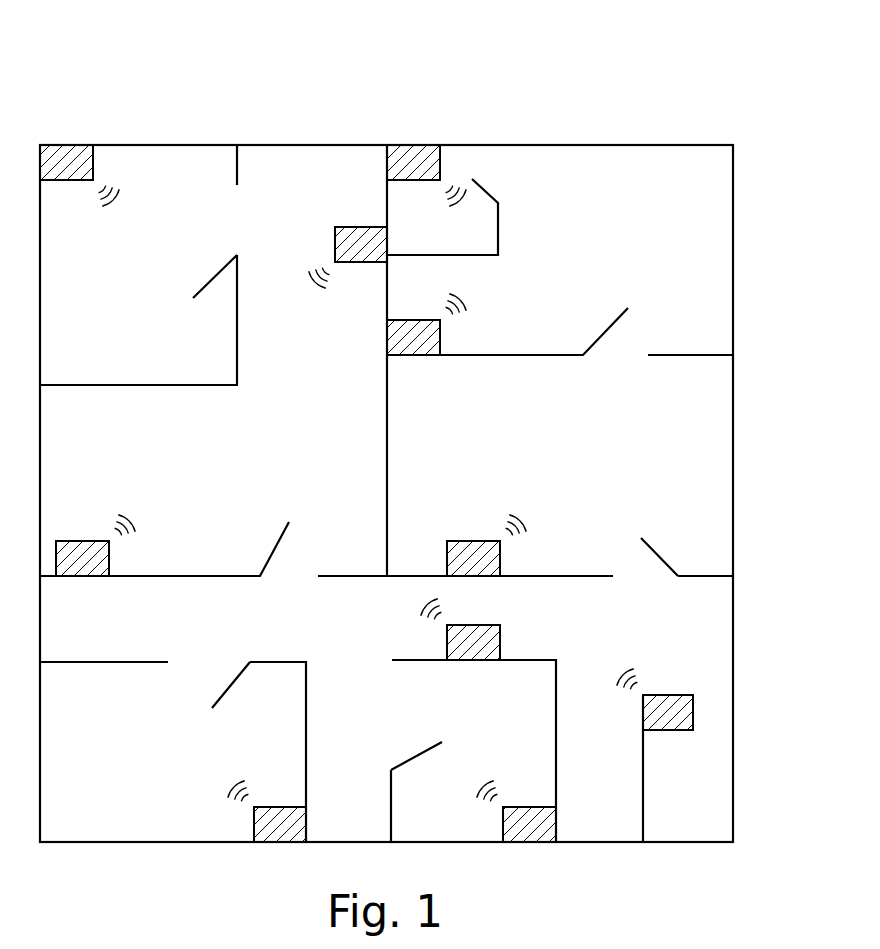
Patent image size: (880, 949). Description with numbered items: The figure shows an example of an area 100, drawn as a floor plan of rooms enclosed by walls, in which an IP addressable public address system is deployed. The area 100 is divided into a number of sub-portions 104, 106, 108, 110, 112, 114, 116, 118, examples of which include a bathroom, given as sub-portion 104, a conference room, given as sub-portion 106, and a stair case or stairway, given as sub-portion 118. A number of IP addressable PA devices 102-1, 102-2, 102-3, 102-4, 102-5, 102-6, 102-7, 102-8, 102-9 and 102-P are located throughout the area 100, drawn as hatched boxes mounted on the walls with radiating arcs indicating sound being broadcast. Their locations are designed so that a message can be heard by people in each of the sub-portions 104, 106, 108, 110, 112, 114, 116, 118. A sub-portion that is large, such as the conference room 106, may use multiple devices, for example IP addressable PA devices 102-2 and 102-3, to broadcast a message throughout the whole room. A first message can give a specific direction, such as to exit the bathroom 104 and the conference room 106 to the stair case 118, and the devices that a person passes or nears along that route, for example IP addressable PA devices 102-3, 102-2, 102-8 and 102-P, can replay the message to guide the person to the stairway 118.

The area 100 is at (107, 55).
The IP addressable PA device 102-1 is at (64, 145).
The IP addressable PA device 102-2 is at (76, 541).
The IP addressable PA device 102-3 is at (355, 227).
The IP addressable PA device 102-4 is at (276, 807).
The IP addressable PA device 102-5 is at (417, 145).
The IP addressable PA device 102-6 is at (412, 320).
The IP addressable PA device 102-7 is at (465, 541).
The IP addressable PA device 102-8 is at (481, 625).
The IP addressable PA device 102-9 is at (518, 807).
The IP addressable PA device 102-P is at (677, 695).
The sub-portion 104 is at (135, 276).
The sub-portion 106 is at (317, 419).
The sub-portion 108 is at (160, 762).
The sub-portion 110 is at (502, 744).
The sub-portion 112 is at (509, 456).
The sub-portion 114 is at (614, 224).
The sub-portion 116 is at (160, 629).
The sub-portion 118 is at (695, 804).